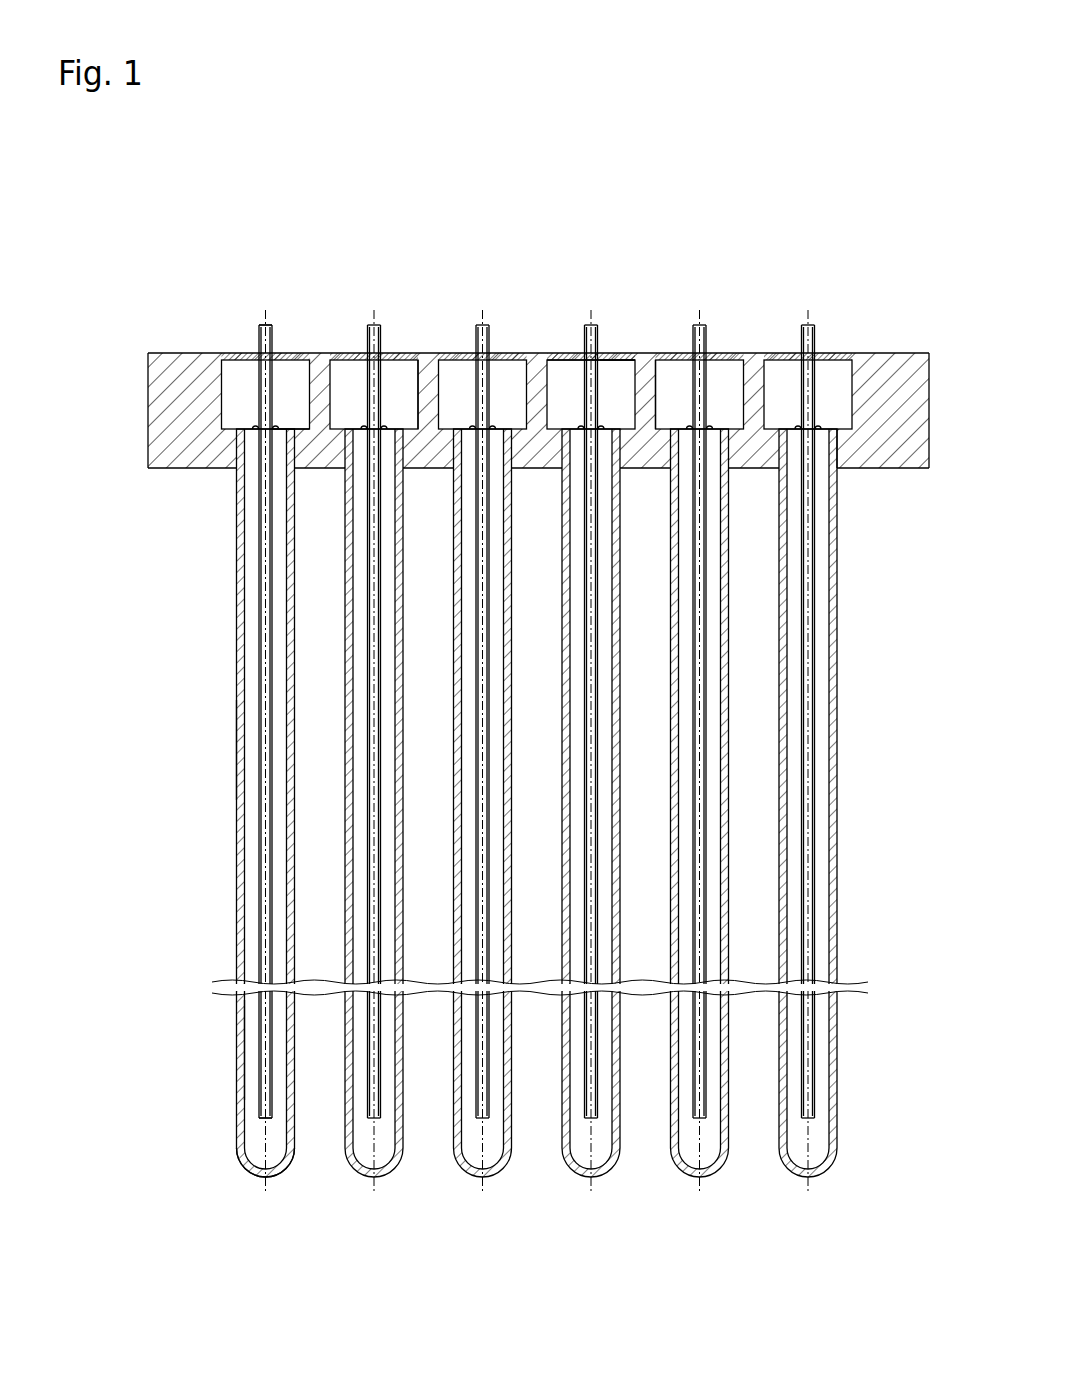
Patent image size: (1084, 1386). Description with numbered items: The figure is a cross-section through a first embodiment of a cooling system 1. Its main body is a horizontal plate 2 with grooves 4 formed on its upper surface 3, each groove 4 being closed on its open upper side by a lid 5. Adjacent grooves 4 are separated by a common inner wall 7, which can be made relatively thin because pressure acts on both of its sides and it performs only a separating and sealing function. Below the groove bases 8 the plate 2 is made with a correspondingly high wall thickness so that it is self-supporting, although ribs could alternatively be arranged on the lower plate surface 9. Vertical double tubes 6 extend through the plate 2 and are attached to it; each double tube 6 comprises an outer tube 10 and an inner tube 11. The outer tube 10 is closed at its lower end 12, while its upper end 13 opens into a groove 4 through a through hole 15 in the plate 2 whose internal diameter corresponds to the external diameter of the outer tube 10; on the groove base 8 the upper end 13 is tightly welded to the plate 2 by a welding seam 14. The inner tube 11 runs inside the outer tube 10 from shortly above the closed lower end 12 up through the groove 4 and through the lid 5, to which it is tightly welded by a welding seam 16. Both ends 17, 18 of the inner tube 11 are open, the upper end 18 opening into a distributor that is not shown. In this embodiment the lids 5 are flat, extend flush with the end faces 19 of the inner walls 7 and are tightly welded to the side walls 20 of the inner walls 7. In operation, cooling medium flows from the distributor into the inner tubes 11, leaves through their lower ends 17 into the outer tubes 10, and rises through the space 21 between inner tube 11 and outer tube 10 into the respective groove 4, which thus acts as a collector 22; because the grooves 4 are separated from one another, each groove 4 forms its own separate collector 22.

The cooling system 1 is at (273, 190).
The horizontal plate 2 is at (150, 352).
The upper surface 3 is at (183, 352).
The groove 4 is at (398, 380).
The lid 5 is at (345, 352).
The double tube 6 is at (236, 680).
The inner wall 7 is at (547, 383).
The groove base 8 is at (663, 420).
The lower plate surface 9 is at (175, 469).
The outer tube 10 is at (238, 768).
The inner tube 11 is at (259, 868).
The lower end 12 is at (250, 1175).
The upper end 13 is at (280, 422).
The welding seam 14 is at (836, 440).
The through hole 15 is at (838, 450).
The welding seam 16 is at (802, 353).
The lower end 17 is at (258, 1120).
The upper end 18 is at (258, 326).
The end face 19 is at (420, 410).
The side wall 20 is at (566, 358).
The space 21 is at (252, 1053).
The collector 22 is at (612, 370).